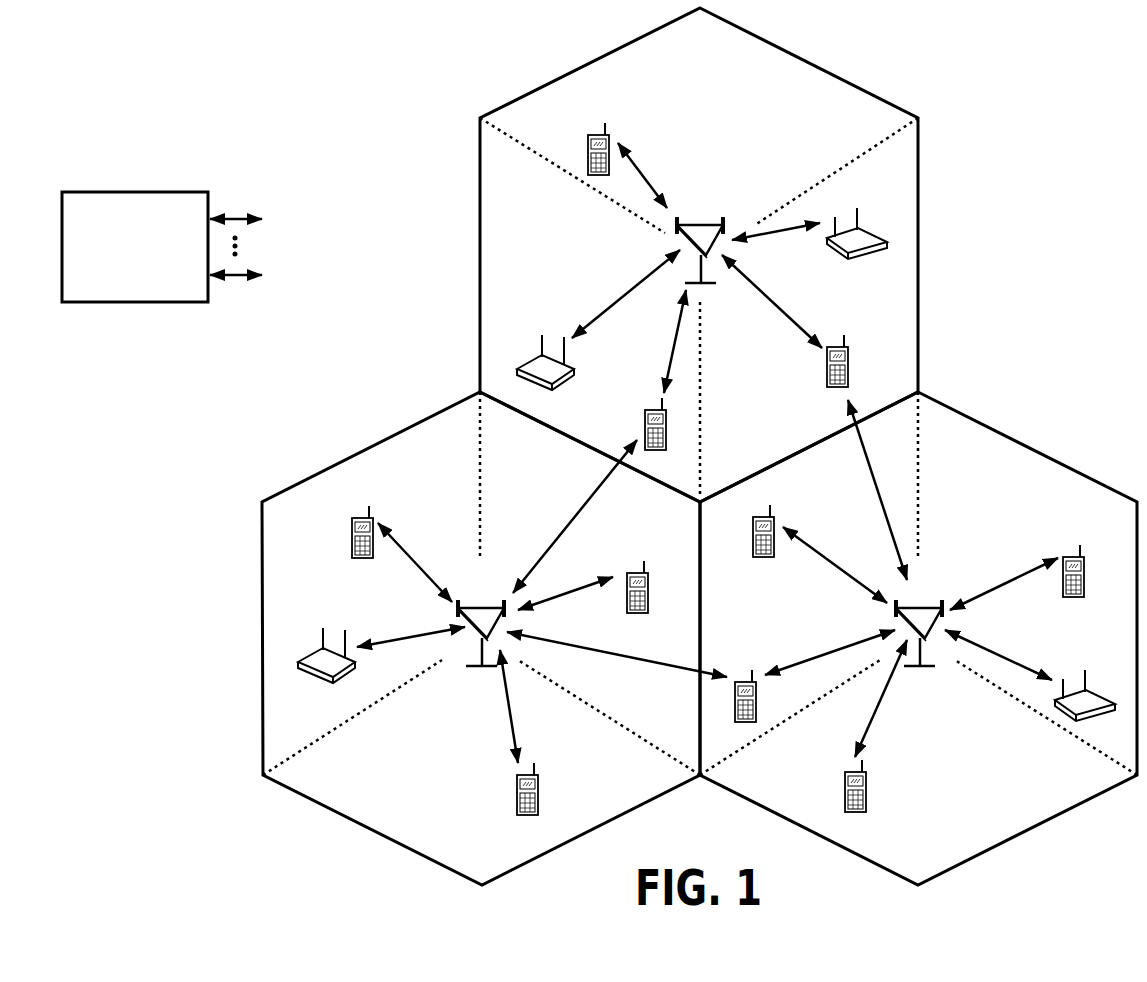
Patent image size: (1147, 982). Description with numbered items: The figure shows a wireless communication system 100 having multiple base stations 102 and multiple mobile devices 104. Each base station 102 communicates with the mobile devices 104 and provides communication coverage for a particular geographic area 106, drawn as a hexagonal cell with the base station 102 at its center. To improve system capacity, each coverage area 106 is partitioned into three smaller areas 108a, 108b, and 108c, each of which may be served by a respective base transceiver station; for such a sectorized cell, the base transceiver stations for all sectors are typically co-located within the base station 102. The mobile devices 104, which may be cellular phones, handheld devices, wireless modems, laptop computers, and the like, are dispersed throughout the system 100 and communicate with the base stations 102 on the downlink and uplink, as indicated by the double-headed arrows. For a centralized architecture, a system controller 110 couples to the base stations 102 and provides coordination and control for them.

The wireless communication system 100 is at (1069, 77).
The base station 102 is at (696, 222).
The mobile device 104 is at (588, 144).
The coverage area 106 is at (812, 61).
The smaller area 108a is at (699, 140).
The smaller area 108b is at (597, 351).
The smaller area 108c is at (700, 583).
The system controller 110 is at (131, 191).